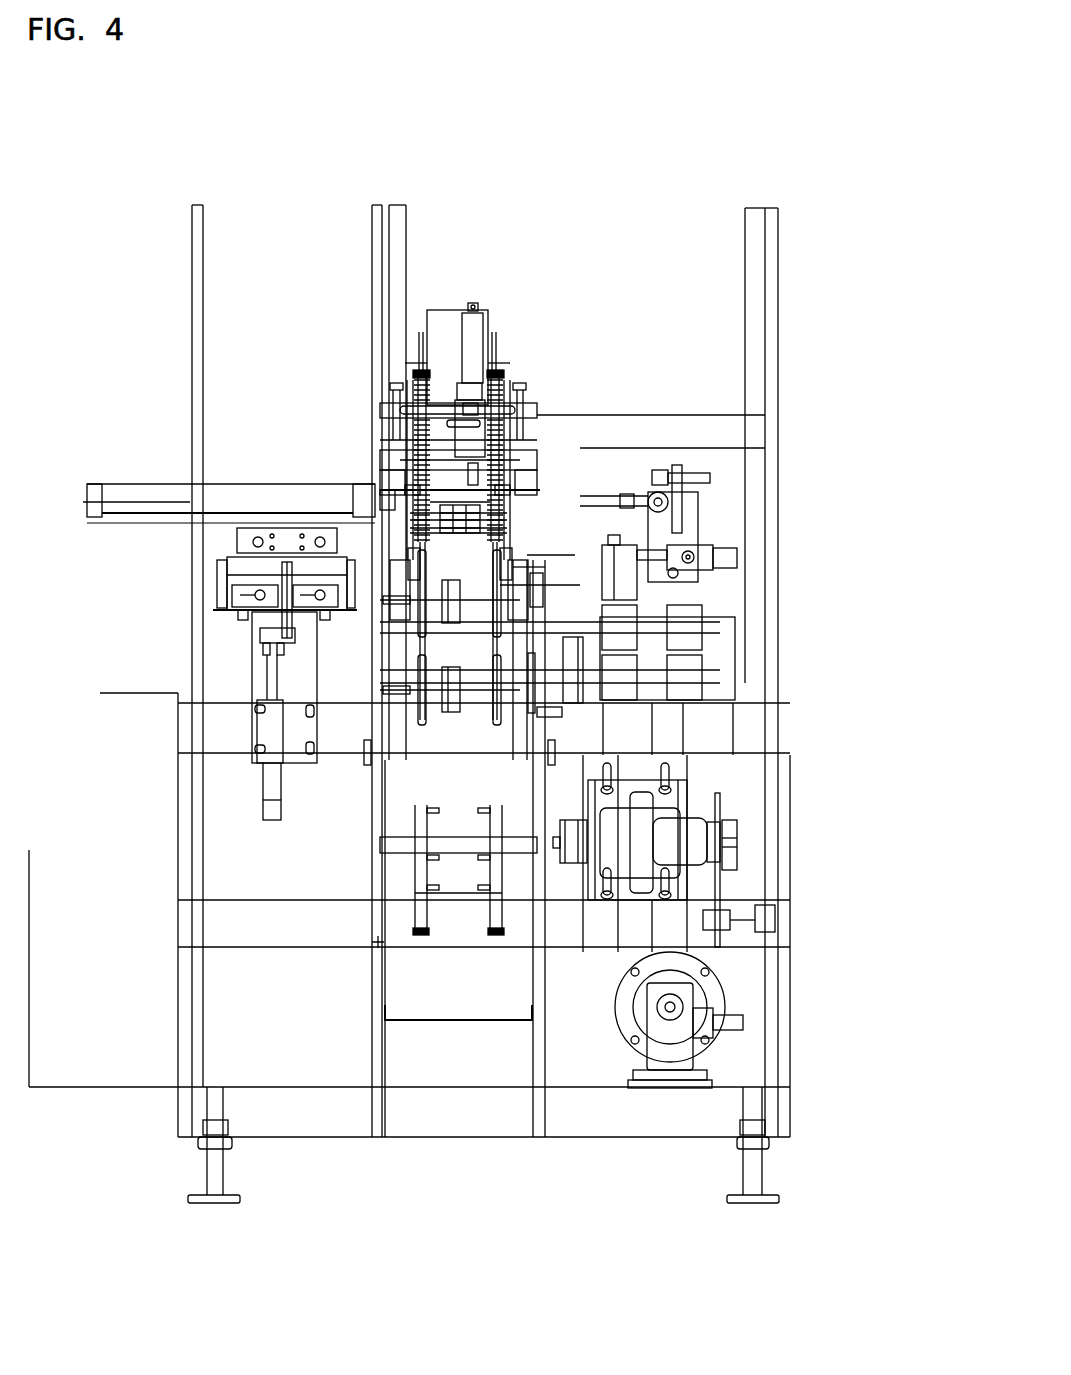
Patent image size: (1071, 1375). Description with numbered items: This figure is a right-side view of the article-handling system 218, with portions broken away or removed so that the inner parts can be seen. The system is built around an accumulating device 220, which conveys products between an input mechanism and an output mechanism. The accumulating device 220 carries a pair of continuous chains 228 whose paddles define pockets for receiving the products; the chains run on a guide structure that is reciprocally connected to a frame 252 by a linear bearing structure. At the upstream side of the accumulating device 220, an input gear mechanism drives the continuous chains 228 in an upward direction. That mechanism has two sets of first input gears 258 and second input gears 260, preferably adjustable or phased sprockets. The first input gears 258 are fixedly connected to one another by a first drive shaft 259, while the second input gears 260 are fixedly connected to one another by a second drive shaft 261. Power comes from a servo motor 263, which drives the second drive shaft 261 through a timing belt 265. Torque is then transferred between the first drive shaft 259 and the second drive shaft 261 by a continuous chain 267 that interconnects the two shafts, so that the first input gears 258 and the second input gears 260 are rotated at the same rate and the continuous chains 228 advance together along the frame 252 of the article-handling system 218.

The article-handling system 218 is at (678, 153).
The accumulating device 220 is at (462, 284).
The continuous chains 228 is at (418, 372).
The frame 252 is at (776, 675).
The first input gears 258 is at (493, 581).
The first drive shaft 259 is at (478, 597).
The second input gears 260 is at (495, 710).
The second drive shaft 261 is at (513, 685).
The servo motor 263 is at (677, 805).
The timing belt 265 is at (567, 800).
The continuous chain 267 is at (447, 648).